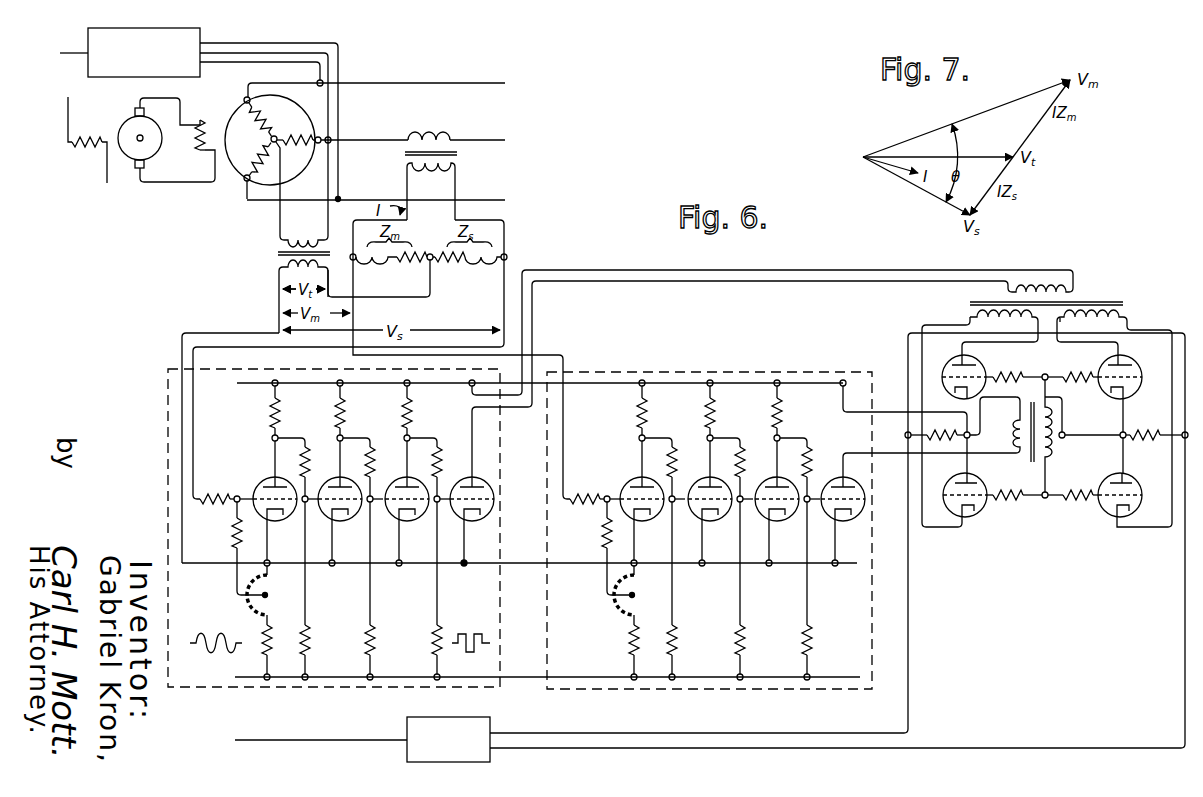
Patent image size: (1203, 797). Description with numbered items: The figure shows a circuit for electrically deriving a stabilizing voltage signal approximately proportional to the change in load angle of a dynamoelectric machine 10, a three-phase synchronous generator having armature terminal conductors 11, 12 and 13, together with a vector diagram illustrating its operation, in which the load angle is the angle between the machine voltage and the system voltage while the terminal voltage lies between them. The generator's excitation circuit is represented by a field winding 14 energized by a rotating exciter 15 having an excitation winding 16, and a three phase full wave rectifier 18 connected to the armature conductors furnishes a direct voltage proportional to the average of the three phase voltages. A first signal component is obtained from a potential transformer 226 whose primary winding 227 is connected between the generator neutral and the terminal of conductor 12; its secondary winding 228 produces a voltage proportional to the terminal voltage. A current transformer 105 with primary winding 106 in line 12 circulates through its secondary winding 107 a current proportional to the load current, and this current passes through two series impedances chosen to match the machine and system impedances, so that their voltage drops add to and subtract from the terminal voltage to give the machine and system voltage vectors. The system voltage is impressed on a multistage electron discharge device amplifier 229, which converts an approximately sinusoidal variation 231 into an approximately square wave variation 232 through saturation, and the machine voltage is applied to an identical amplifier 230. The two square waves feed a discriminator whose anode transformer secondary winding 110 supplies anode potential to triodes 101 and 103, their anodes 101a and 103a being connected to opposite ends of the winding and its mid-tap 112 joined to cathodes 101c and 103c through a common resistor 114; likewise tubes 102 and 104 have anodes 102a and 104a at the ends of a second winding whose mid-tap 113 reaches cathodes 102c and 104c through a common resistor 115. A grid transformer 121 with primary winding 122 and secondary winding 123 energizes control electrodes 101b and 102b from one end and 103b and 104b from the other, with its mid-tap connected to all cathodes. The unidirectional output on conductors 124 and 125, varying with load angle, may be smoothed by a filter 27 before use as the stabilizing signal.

The three phase full wave rectifier 18 is at (153, 28).
The excitation winding 16 is at (90, 130).
The rotating exciter 15 is at (160, 153).
The field winding 14 is at (203, 126).
The dynamoelectric machine 10 is at (291, 179).
The armature terminal conductor 11 is at (490, 86).
The armature terminal conductor 12 is at (480, 141).
The armature terminal conductor 13 is at (473, 201).
The primary winding 106 is at (428, 136).
The current transformer 105 is at (460, 156).
The secondary winding 107 is at (427, 174).
The primary winding 227 is at (298, 233).
The potential transformer 226 is at (276, 253).
The secondary winding 228 is at (276, 271).
The electron discharge device amplifier 229 is at (168, 369).
The amplifier 230 is at (676, 372).
The sinusoidal variation 231 is at (229, 620).
The square wave variation 232 is at (478, 621).
The secondary winding 110 is at (975, 316).
The mid-tap 112 is at (1001, 325).
The mid-tap 113 is at (1080, 324).
The triode 101 is at (973, 375).
The anode 101a is at (976, 367).
The control electrode 101b is at (958, 366).
The cathode 101c is at (956, 392).
The triode electron discharge device 102 is at (1126, 374).
The anode 102a is at (1130, 367).
The control electrode 102b is at (1110, 370).
The cathode 102c is at (1114, 398).
The triode 103 is at (979, 498).
The anode 103a is at (970, 516).
The control electrode 103b is at (975, 485).
The cathode 103c is at (957, 480).
The triode electron discharge device 104 is at (1118, 499).
The anode 104a is at (1120, 518).
The control electrode 104b is at (1110, 486).
The cathode 104c is at (1128, 484).
The common resistor 114 is at (925, 432).
The common resistor 115 is at (1148, 431).
The grid transformer 121 is at (1028, 406).
The primary winding 122 is at (1013, 432).
The secondary winding 123 is at (1052, 452).
The filter 27 is at (455, 710).
The conductor 124 is at (527, 729).
The conductor 125 is at (524, 755).